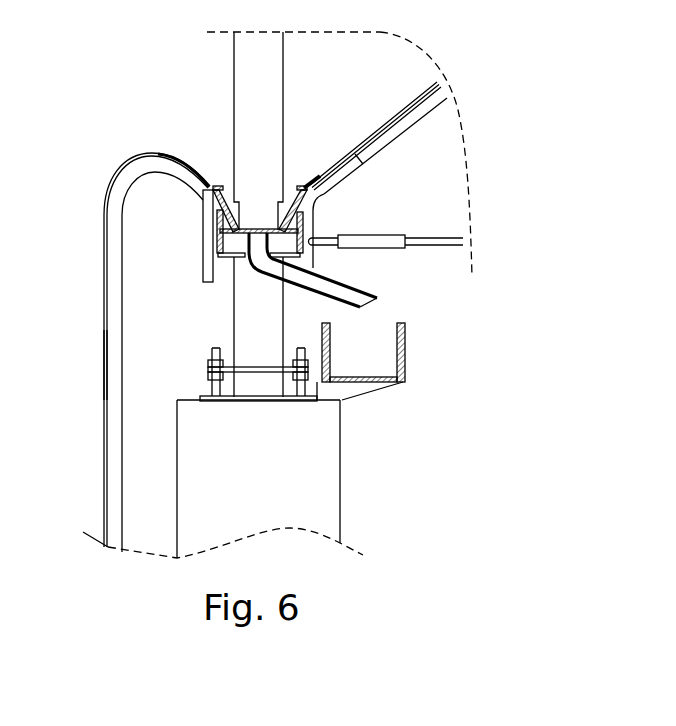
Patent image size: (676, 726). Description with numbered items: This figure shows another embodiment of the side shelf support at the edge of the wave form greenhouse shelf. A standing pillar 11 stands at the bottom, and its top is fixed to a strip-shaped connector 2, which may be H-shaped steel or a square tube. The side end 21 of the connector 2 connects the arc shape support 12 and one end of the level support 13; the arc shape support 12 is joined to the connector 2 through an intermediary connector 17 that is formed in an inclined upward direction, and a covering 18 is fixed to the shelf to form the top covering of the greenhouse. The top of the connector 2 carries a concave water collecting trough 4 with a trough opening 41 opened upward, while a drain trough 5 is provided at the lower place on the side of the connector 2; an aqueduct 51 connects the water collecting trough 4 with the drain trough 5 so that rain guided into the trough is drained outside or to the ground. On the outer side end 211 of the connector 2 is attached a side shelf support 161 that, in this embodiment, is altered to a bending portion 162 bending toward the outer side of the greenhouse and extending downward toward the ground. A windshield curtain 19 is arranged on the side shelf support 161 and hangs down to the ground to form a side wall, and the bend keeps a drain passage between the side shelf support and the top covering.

The connector 2 is at (305, 235).
The water collecting trough 4 is at (203, 207).
The drain trough 5 is at (405, 343).
The standing pillar 11 is at (312, 485).
The arc shape support 12 is at (405, 120).
The level support 13 is at (433, 242).
The intermediary connector 17 is at (328, 167).
The covering 18 is at (408, 102).
The windshield curtain 19 is at (107, 417).
The side end 21 is at (300, 258).
The trough opening 41 is at (257, 197).
The aqueduct 51 is at (362, 288).
The side shelf support 161 is at (108, 358).
The bending portion 162 is at (132, 172).
The outer side end 211 is at (212, 228).